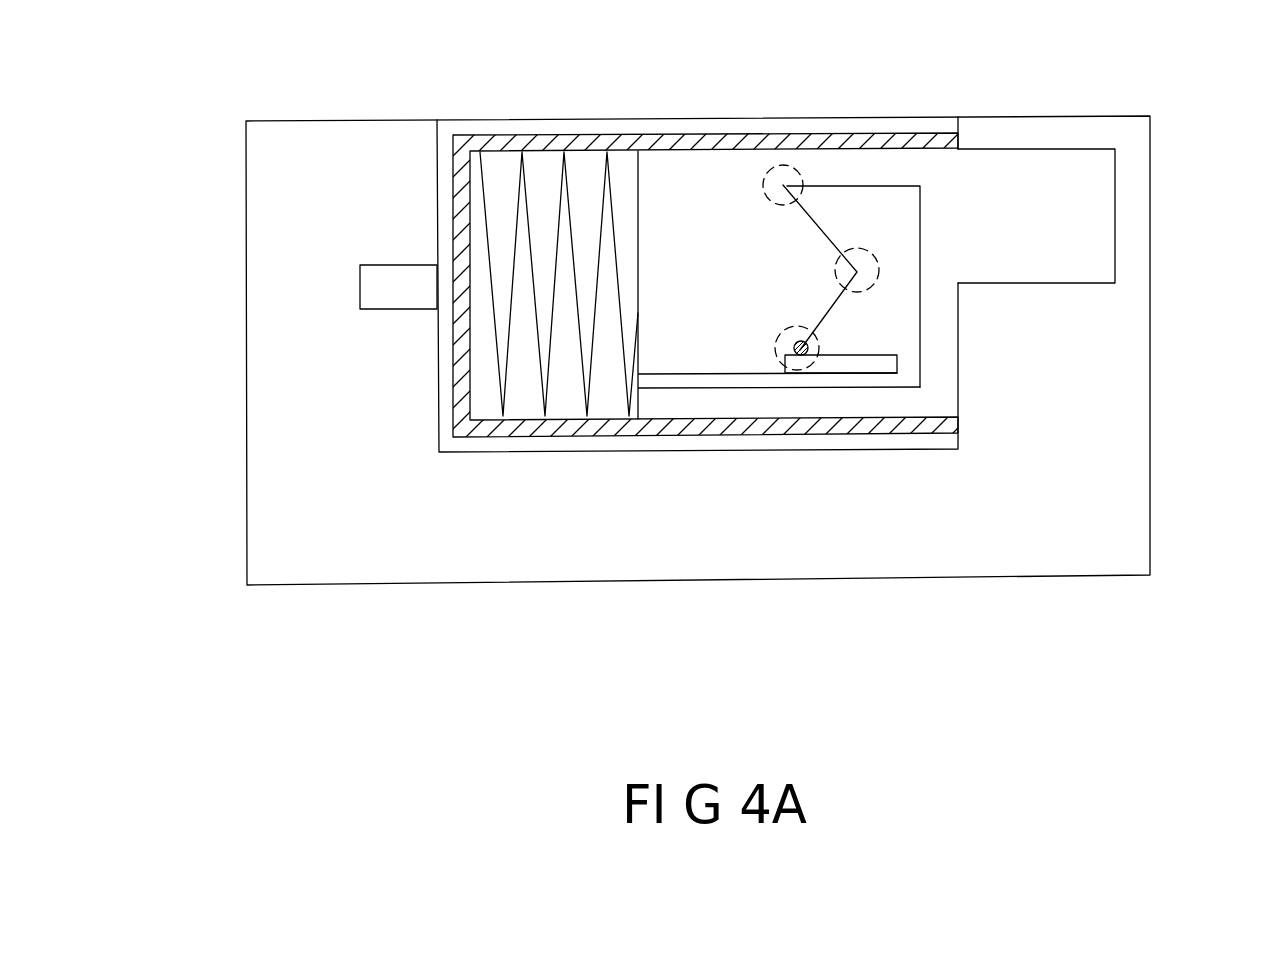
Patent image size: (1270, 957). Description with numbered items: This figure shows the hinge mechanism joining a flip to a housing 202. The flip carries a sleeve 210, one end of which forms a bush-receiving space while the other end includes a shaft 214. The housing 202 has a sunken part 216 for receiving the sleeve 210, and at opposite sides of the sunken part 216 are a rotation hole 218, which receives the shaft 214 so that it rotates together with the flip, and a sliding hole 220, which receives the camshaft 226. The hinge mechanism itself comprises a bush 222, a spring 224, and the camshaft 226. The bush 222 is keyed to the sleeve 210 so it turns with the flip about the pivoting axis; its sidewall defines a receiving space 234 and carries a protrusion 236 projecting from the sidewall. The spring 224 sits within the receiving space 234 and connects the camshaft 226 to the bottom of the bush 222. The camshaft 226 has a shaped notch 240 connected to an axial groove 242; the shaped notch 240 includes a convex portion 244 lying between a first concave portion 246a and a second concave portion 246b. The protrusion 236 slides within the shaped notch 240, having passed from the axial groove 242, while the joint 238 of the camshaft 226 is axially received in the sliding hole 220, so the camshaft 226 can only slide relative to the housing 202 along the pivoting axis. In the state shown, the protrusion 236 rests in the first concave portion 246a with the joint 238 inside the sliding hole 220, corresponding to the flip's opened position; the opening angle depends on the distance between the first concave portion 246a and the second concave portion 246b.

The housing 202 is at (315, 553).
The sleeve 210 is at (567, 128).
The shaft 214 is at (405, 280).
The sunken part 216 is at (462, 452).
The rotation hole 218 is at (360, 287).
The sliding hole 220 is at (1115, 215).
The bush 222 is at (662, 142).
The spring 224 is at (517, 217).
The camshaft 226 is at (712, 178).
The receiving space 234 is at (483, 363).
The protrusion 236 is at (800, 362).
The joint 238 is at (1018, 178).
The shaped notch 240 is at (885, 310).
The axial groove 242 is at (686, 381).
The convex portion 244 is at (877, 257).
The first concave portion 246a is at (806, 370).
The second concave portion 246b is at (782, 165).